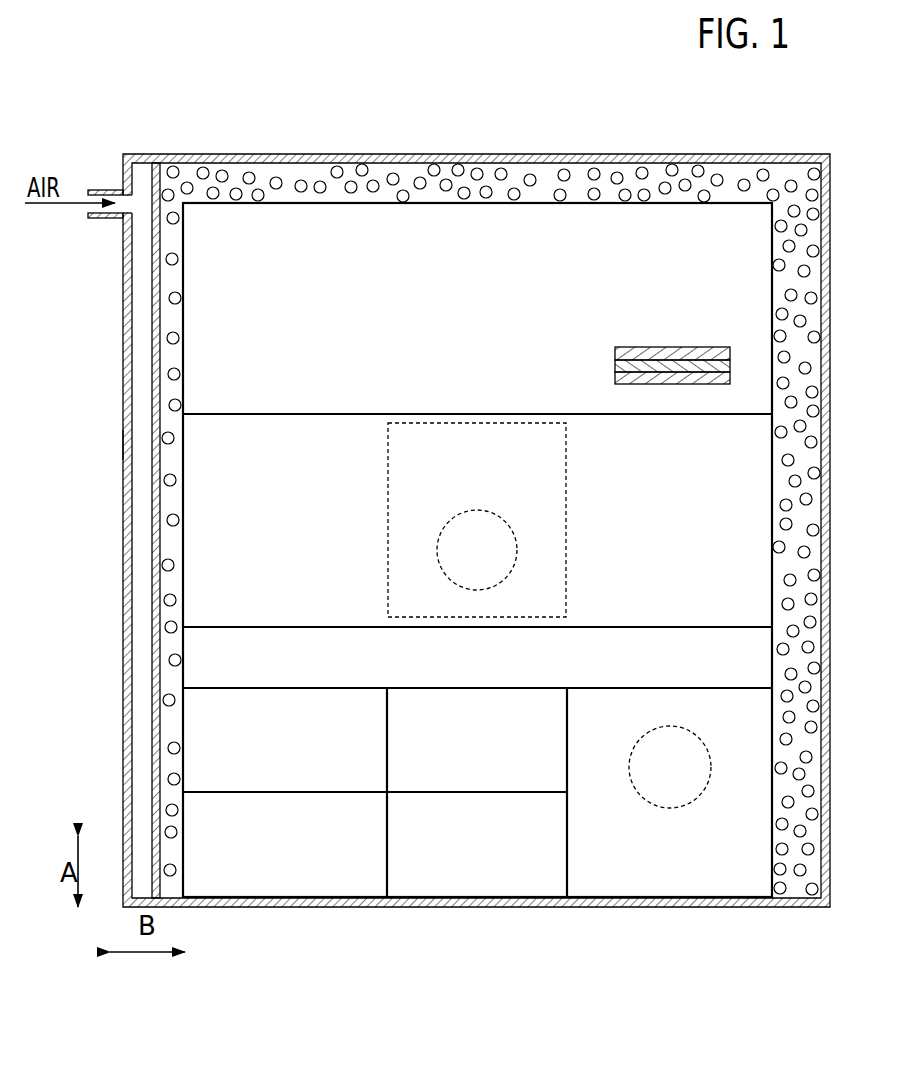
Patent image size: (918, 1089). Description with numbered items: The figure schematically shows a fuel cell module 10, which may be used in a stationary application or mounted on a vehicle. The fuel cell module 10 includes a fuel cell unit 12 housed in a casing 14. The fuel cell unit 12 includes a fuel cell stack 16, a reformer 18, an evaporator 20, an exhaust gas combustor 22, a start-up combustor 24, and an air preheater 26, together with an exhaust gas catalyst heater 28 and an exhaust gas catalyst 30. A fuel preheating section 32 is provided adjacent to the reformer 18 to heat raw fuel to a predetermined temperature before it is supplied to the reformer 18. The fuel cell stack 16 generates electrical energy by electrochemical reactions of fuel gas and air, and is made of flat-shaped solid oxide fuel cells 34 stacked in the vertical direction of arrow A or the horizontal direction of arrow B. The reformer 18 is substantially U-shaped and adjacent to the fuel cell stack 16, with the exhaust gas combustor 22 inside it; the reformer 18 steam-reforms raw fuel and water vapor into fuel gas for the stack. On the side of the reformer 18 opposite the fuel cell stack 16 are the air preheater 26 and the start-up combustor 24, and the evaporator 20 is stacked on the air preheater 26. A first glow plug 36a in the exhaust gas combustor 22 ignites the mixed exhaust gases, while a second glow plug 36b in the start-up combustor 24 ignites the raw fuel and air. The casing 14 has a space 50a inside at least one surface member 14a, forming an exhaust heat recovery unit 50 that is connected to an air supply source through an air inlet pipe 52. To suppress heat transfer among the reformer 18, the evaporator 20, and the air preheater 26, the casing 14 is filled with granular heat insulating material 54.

The fuel cell module 10 is at (727, 98).
The fuel cell unit 12 is at (457, 191).
The casing 14 is at (786, 152).
The surface member 14a is at (122, 443).
The fuel cell stack 16 is at (604, 209).
The reformer 18 is at (305, 413).
The evaporator 20 is at (519, 885).
The exhaust gas combustor 22 is at (566, 473).
The start-up combustor 24 is at (747, 888).
The air preheater 26 is at (567, 705).
The exhaust gas catalyst heater 28 is at (258, 700).
The exhaust gas catalyst 30 is at (300, 885).
The fuel preheating section 32 is at (604, 633).
The solid oxide fuel cell 34 is at (618, 368).
The first glow plug 36a is at (458, 574).
The second glow plug 36b is at (693, 743).
The exhaust heat recovery unit 50 is at (120, 157).
The space 50a is at (140, 393).
The air inlet pipe 52 is at (104, 219).
The granular heat insulating material 54 is at (325, 185).